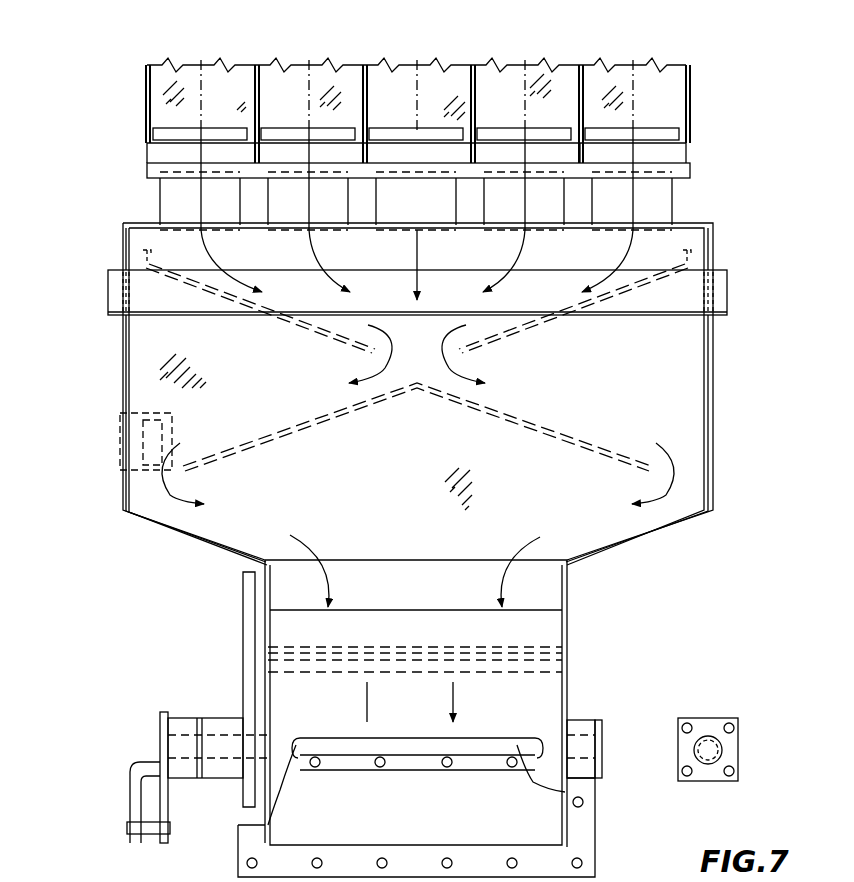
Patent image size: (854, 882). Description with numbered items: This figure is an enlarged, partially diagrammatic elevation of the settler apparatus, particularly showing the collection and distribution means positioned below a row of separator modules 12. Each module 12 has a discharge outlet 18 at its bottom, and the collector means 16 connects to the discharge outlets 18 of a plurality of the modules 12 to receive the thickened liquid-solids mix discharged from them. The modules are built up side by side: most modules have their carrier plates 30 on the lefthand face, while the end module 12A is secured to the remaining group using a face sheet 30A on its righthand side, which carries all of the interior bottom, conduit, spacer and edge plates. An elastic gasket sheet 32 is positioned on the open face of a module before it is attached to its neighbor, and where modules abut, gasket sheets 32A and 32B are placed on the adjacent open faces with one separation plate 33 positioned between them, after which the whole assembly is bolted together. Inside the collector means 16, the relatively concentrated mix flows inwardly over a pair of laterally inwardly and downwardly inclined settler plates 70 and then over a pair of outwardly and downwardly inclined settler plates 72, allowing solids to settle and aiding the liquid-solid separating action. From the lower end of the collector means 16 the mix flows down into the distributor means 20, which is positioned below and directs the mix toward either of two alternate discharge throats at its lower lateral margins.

The separator module 12 is at (216, 63).
The end module 12A is at (694, 82).
The collector means 16 is at (120, 373).
The discharge outlet 18 is at (163, 198).
The distributor means 20 is at (570, 630).
The carrier plate 30 is at (146, 96).
The face sheet 30A is at (690, 118).
The gasket sheet 32 is at (257, 65).
The gasket sheet 32A is at (580, 65).
The gasket sheet 32B is at (587, 65).
The separation plate 33 is at (583, 65).
The settler plate 70 is at (285, 325).
The settler plate 72 is at (276, 440).